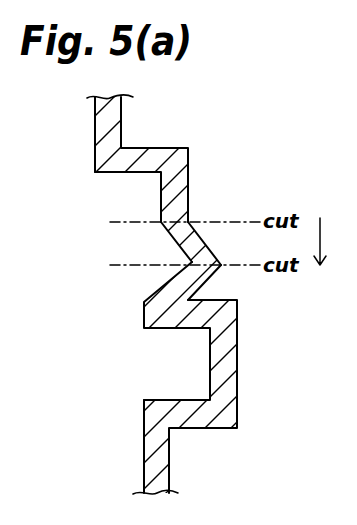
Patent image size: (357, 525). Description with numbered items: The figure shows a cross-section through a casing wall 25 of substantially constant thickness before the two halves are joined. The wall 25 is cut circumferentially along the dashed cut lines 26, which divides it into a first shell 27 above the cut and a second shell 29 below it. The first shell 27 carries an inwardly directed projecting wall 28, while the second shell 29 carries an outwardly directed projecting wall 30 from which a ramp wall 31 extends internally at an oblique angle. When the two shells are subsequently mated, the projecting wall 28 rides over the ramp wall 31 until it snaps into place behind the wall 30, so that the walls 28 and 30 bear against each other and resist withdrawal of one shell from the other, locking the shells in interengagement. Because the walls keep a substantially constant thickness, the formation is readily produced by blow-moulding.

The wall 25 is at (95, 126).
The circumferential cut 26 is at (108, 222).
The first shell 27 is at (228, 161).
The inwardly directed projecting wall 28 is at (212, 245).
The second shell 29 is at (265, 361).
The outwardly directed projecting wall 30 is at (145, 442).
The ramp wall 31 is at (224, 278).